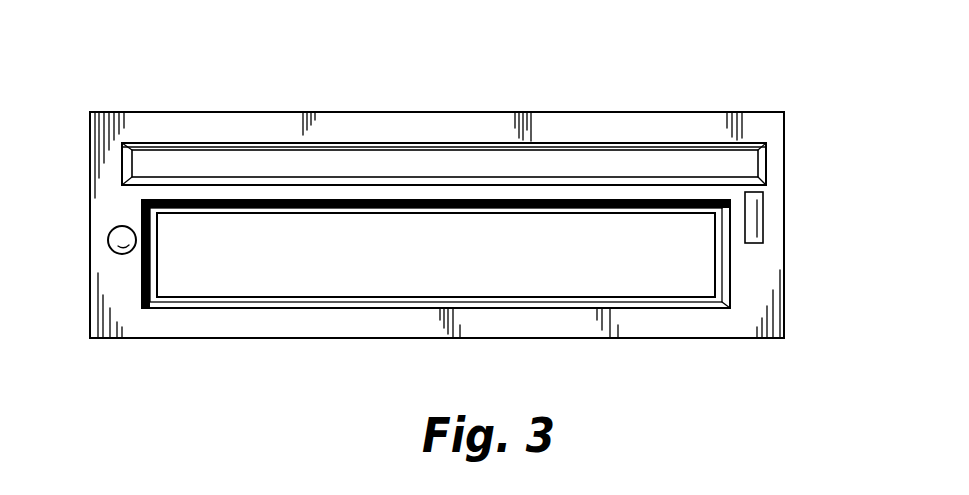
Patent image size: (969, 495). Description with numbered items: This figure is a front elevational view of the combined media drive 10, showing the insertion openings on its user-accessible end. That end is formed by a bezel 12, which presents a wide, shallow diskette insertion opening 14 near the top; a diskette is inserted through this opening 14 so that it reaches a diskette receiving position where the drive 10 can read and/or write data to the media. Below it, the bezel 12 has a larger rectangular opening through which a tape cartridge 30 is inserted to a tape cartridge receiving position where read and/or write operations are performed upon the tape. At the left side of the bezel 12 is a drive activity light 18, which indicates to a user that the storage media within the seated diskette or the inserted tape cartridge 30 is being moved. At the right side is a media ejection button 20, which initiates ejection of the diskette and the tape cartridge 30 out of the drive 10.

The drive 10 is at (449, 240).
The bezel 12 is at (667, 320).
The diskette insertion opening 14 is at (427, 163).
The drive activity light 18 is at (112, 232).
The media ejection button 20 is at (753, 223).
The tape cartridge 30 is at (315, 262).